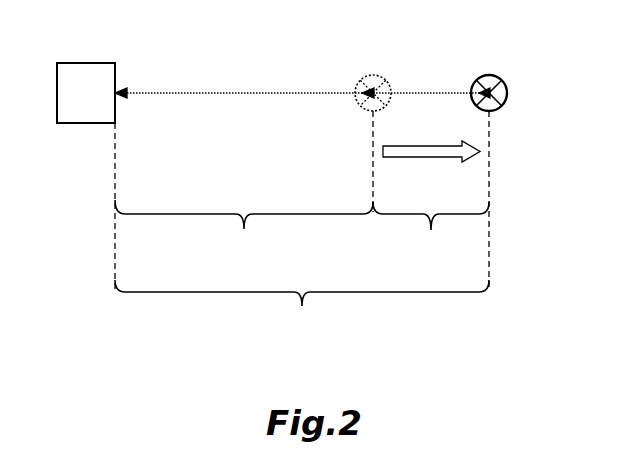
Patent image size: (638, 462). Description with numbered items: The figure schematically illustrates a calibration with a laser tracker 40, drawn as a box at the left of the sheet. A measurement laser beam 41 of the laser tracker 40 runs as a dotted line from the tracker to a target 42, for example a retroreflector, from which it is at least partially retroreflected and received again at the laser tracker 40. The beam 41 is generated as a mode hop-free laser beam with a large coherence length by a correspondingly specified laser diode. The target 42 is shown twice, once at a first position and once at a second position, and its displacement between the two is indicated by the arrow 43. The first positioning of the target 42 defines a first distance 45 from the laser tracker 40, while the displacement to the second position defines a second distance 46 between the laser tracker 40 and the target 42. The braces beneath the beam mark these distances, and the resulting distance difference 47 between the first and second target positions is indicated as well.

The laser tracker 40 is at (72, 105).
The measurement laser beam 41 is at (302, 73).
The target 42 is at (448, 70).
The arrow 43 is at (431, 170).
The first distance 45 is at (244, 232).
The second distance 46 is at (302, 310).
The distance difference 47 is at (431, 233).